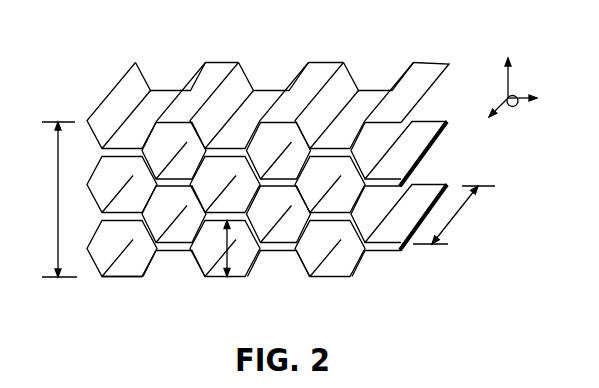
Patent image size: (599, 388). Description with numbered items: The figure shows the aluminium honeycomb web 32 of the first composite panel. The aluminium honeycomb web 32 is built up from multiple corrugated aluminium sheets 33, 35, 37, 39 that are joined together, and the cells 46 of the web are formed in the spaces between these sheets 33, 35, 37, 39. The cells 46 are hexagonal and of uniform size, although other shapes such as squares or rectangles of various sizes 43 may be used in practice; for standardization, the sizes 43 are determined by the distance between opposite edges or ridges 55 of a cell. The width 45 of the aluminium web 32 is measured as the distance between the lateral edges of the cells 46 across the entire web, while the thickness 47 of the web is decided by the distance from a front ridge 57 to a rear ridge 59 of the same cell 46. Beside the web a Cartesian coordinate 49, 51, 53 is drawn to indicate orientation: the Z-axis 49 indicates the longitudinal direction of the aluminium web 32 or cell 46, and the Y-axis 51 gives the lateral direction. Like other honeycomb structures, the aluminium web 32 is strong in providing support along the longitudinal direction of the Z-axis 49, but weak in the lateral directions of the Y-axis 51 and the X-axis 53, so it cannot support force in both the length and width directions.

The aluminium honeycomb web 32 is at (105, 88).
The cells 46 is at (244, 104).
The ridges 55 is at (223, 62).
The corrugated aluminium sheet 39 is at (449, 64).
The corrugated aluminium sheet 37 is at (437, 120).
The corrugated aluminium sheet 35 is at (436, 181).
The rear ridge 59 is at (428, 198).
The corrugated aluminium sheet 33 is at (380, 253).
The front ridge 57 is at (330, 278).
The sizes 43 is at (228, 279).
The width 45 is at (57, 200).
The thickness 47 is at (460, 214).
The Y-axis 51 is at (497, 80).
The X-axis 53 is at (516, 93).
The Z-axis 49 is at (511, 107).